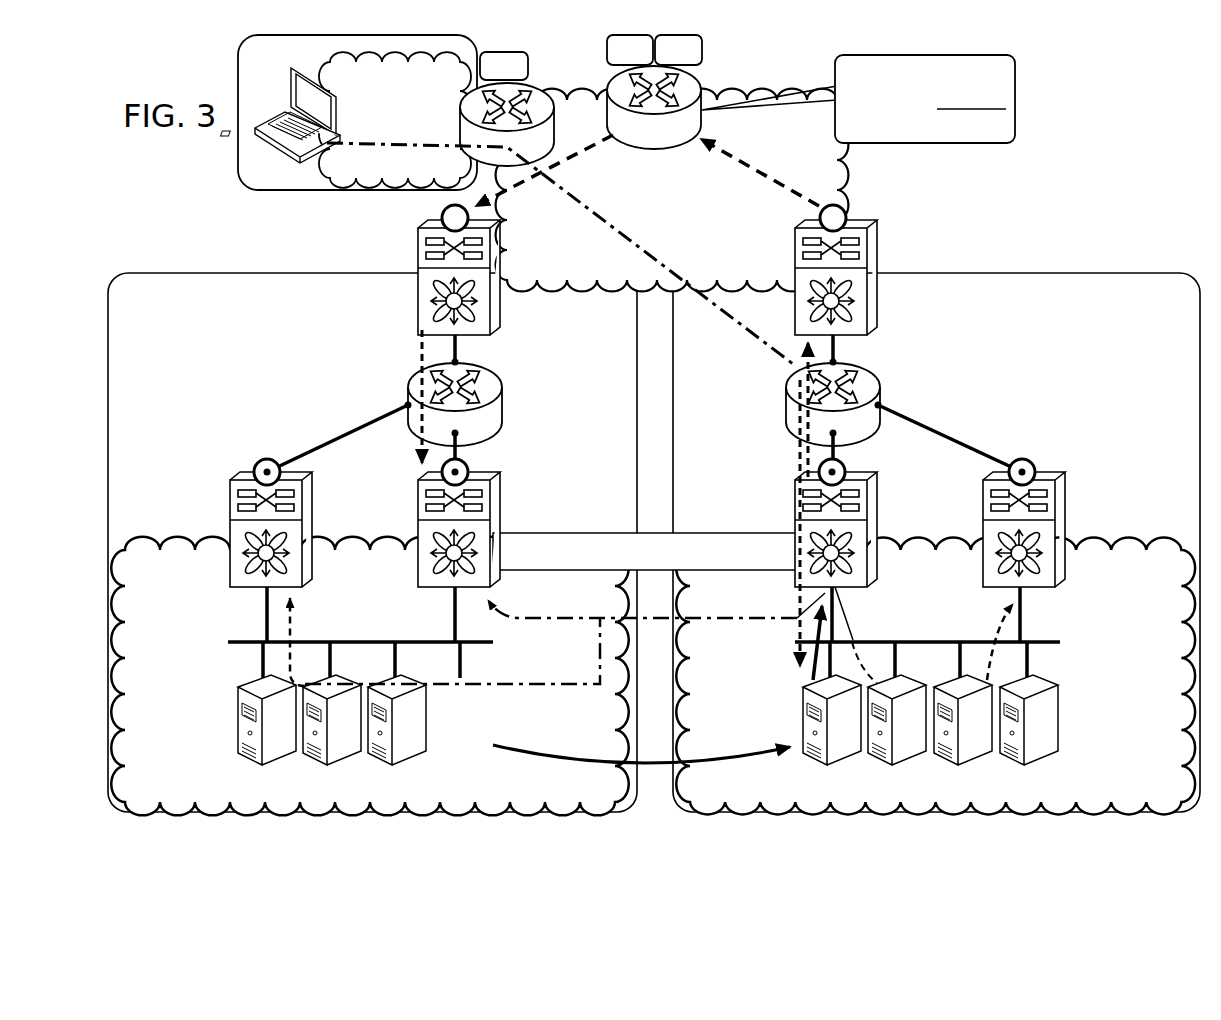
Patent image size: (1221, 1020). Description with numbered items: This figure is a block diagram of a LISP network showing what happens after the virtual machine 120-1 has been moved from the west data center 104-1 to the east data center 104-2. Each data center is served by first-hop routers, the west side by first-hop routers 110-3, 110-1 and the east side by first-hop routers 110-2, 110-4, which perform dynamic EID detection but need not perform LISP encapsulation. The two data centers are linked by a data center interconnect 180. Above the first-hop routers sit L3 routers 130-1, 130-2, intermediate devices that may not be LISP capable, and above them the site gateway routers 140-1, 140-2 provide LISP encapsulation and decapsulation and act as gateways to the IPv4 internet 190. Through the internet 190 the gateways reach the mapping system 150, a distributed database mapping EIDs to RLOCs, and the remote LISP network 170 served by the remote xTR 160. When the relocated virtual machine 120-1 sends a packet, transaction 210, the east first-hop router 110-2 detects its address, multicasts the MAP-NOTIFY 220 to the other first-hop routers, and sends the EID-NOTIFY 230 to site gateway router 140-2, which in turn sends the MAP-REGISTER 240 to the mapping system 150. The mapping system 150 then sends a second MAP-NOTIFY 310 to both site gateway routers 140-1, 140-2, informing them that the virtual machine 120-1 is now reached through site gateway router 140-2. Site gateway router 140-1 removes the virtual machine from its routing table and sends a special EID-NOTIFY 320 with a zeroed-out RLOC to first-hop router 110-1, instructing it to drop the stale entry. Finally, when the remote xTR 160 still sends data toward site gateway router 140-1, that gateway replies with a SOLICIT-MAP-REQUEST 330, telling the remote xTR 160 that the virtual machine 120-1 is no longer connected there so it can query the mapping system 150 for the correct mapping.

The west data center 104-1 is at (205, 611).
The east data center 104-2 is at (1147, 611).
The first-hop router 110-1 is at (418, 535).
The first-hop router 110-2 is at (872, 535).
The first-hop router 110-3 is at (230, 535).
The first-hop router 110-4 is at (1058, 535).
The virtual machine 120-1 is at (803, 718).
The L3 router 130-1 is at (503, 397).
The L3 router 130-2 is at (880, 403).
The site gateway router 140-1 is at (418, 266).
The site gateway router 140-2 is at (882, 270).
The mapping system 150 is at (704, 76).
The remote xTR 160 is at (562, 112).
The remote LISP network 170 is at (293, 193).
The data center interconnect 180 is at (618, 533).
The internet 190 is at (672, 233).
The dynamic EID detection transaction 210 is at (800, 628).
The MAP-NOTIFY message 220 is at (575, 620).
The EID-NOTIFY message 230 is at (800, 450).
The MAP-REGISTER message 240 is at (775, 186).
The second MAP-NOTIFY 310 is at (544, 181).
The special EID-NOTIFY message 320 is at (420, 360).
The SOLICIT-MAP-REQUEST message 330 is at (680, 263).